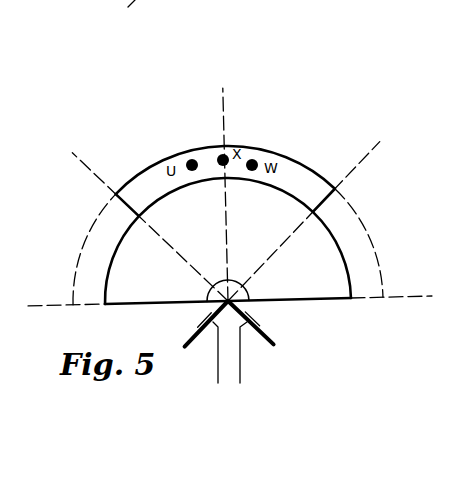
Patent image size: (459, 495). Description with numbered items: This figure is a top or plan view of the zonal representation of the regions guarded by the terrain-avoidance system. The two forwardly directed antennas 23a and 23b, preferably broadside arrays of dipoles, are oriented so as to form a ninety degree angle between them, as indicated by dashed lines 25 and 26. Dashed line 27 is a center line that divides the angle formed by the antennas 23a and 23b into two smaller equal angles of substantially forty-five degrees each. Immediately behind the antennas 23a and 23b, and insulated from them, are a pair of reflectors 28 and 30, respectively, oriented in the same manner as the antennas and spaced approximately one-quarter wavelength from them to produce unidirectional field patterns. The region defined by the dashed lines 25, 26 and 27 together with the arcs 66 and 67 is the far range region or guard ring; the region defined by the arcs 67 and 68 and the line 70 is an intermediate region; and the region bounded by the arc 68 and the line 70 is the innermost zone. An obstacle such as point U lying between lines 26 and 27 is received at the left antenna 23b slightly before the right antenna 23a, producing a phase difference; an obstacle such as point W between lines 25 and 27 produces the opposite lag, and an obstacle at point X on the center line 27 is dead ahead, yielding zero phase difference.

The dashed line 25 is at (358, 163).
The dashed line 26 is at (88, 172).
The center line 27 is at (223, 92).
The reflector 28 is at (265, 345).
The reflector 30 is at (200, 338).
The arc 66 is at (298, 157).
The arc 67 is at (280, 188).
The arc 68 is at (250, 294).
The line 70 is at (145, 287).
The forwardly directed antenna 23a is at (262, 323).
The forwardly directed antenna 23b is at (202, 324).